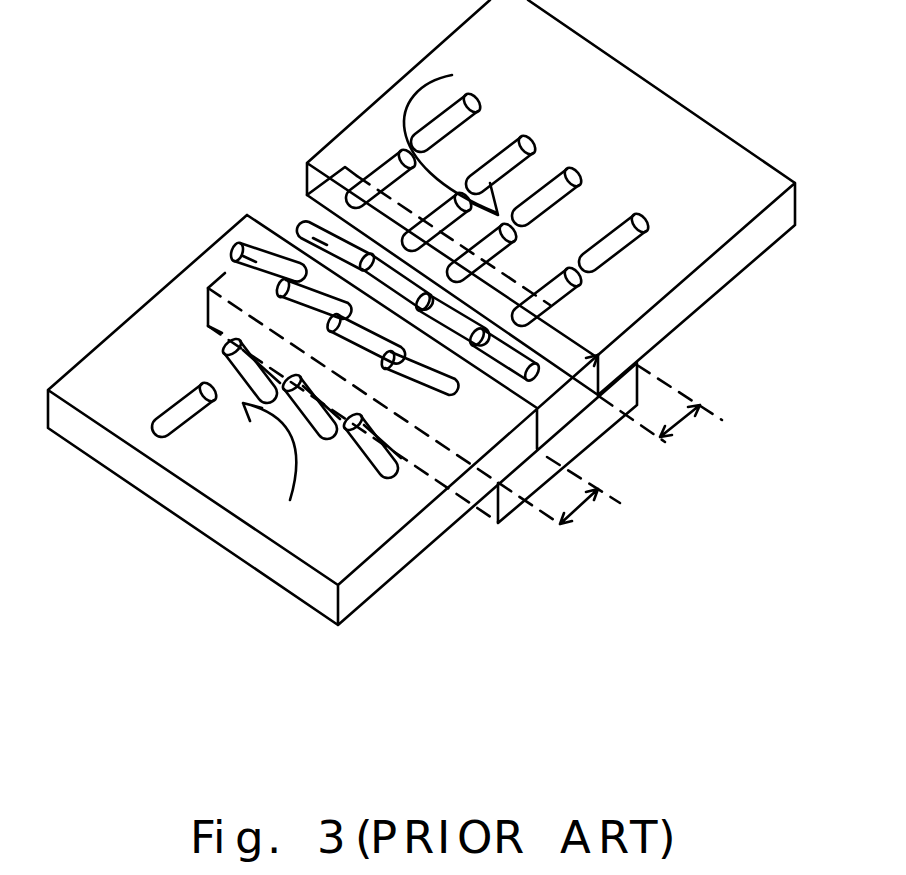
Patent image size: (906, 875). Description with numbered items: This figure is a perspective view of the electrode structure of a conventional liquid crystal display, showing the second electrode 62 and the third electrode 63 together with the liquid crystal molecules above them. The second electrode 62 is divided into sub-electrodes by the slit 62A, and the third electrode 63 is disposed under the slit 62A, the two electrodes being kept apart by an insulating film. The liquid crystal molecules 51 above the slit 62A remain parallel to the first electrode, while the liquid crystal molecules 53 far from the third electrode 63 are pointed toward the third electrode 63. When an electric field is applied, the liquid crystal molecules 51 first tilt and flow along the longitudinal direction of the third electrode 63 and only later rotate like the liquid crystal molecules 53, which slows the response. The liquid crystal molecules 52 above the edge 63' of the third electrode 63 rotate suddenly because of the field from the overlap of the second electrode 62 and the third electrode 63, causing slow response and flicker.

The liquid crystal molecules 51 is at (537, 408).
The liquid crystal molecules 52 is at (237, 254).
The liquid crystal molecules 53 is at (167, 418).
The second electrode 62 is at (362, 532).
The slit 62A is at (554, 372).
The third electrode 63 is at (682, 434).
The edge of the third electrode 63' is at (643, 474).